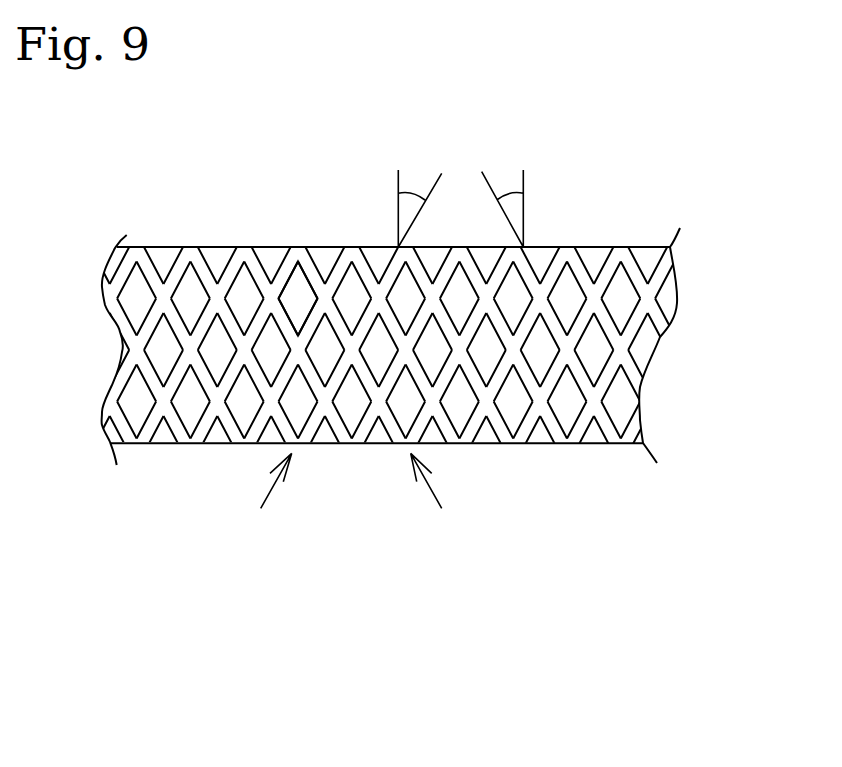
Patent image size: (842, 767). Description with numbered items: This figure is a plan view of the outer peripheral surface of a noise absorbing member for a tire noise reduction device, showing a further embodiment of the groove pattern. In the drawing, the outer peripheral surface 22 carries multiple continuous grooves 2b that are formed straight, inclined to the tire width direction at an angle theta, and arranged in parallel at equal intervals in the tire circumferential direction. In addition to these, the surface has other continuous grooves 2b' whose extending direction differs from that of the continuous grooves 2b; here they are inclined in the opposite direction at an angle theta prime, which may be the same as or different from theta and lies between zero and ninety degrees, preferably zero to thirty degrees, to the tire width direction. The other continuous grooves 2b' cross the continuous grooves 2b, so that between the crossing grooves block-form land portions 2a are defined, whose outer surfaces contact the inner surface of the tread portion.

The mesh sheet 22 is at (628, 220).
The continuous groove 2b is at (378, 315).
The other continuous groove 2b' is at (378, 315).
The land portion 2a is at (308, 292).